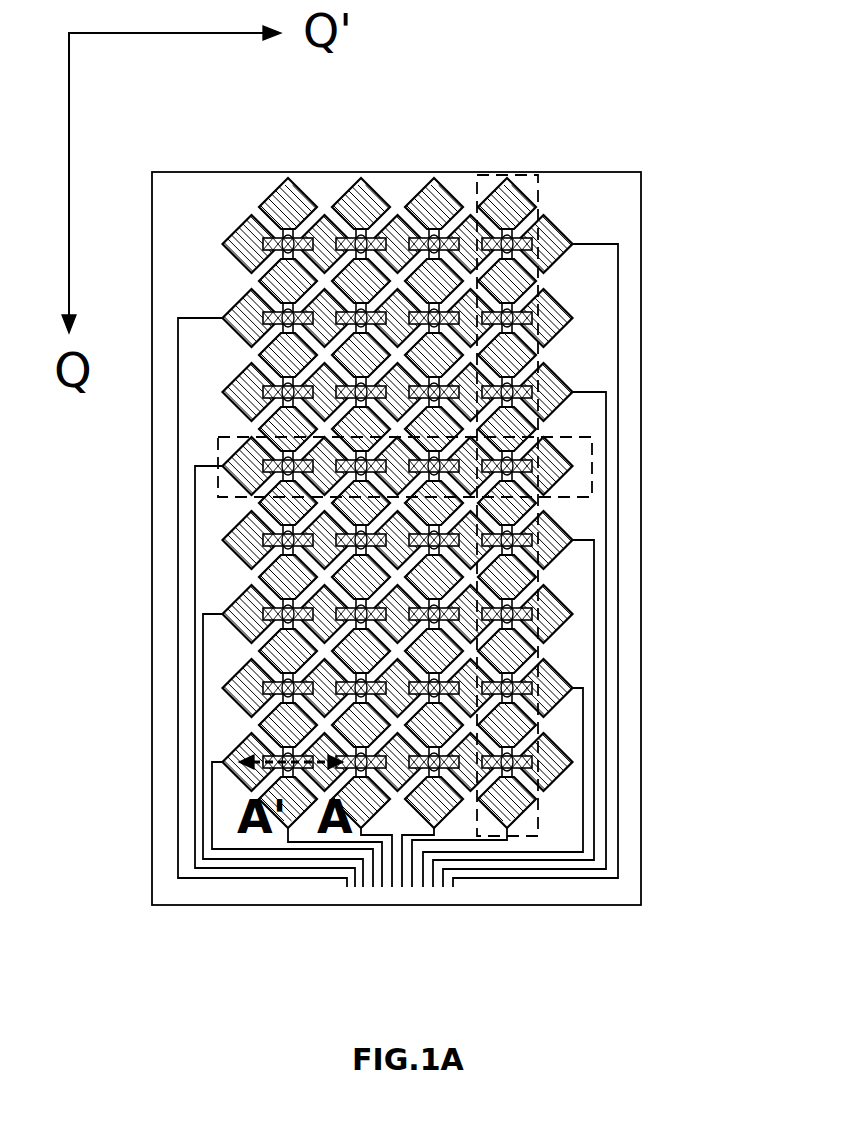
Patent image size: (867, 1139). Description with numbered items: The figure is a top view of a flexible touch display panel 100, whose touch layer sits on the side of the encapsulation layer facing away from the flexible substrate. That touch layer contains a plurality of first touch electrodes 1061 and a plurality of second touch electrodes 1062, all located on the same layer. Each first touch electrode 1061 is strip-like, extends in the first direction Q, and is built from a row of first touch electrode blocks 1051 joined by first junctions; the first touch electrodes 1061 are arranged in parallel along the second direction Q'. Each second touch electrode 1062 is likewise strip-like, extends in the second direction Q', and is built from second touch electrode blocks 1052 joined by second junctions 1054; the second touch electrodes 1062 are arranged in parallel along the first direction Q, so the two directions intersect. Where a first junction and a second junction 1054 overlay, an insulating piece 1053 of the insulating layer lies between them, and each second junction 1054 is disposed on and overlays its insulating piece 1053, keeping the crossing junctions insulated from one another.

The flexible touch display panel 100 is at (437, 987).
The first touch electrode block 1051 is at (280, 286).
The second touch electrode block 1052 is at (325, 238).
The insulating piece 1053 is at (292, 233).
The second junction 1054 is at (312, 238).
The first touch electrode 1061 is at (540, 203).
The second touch electrode 1062 is at (593, 467).